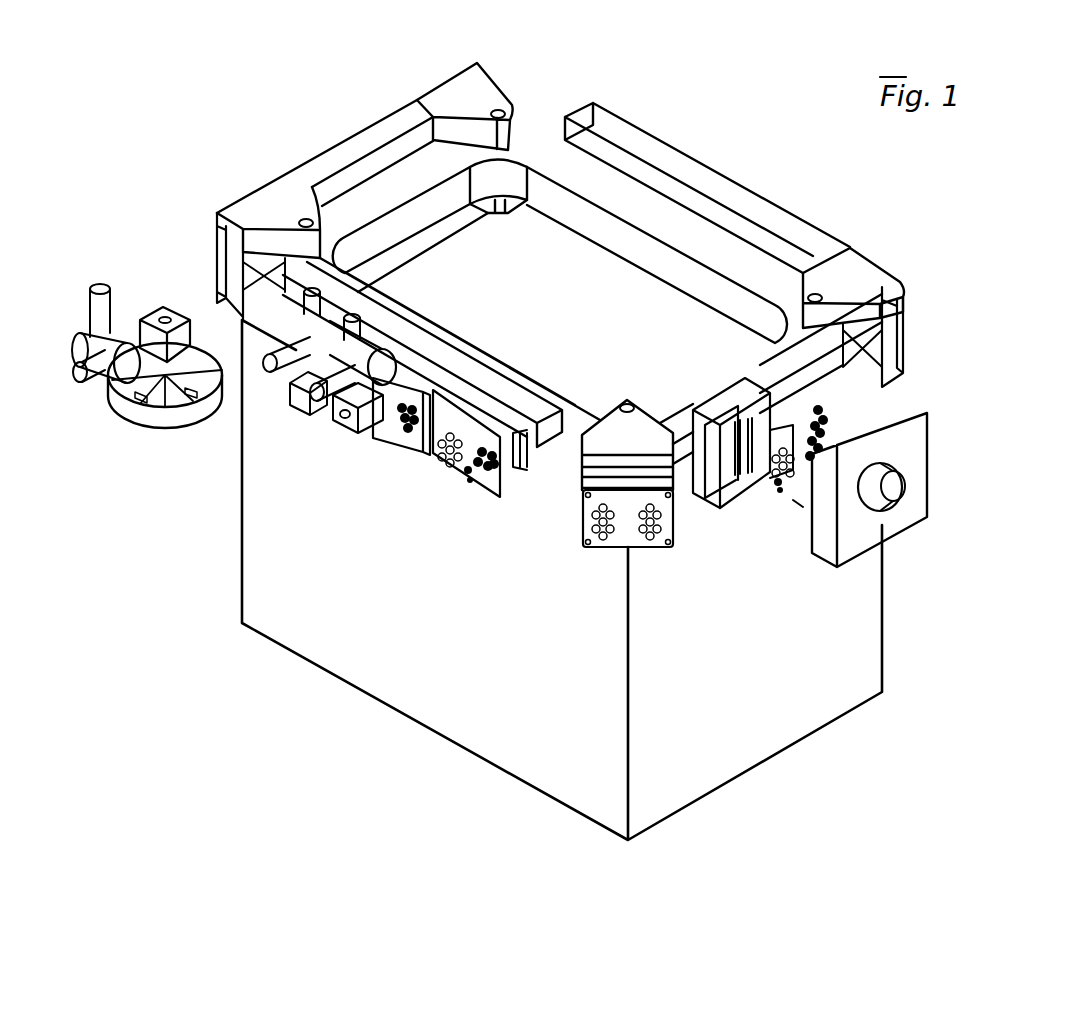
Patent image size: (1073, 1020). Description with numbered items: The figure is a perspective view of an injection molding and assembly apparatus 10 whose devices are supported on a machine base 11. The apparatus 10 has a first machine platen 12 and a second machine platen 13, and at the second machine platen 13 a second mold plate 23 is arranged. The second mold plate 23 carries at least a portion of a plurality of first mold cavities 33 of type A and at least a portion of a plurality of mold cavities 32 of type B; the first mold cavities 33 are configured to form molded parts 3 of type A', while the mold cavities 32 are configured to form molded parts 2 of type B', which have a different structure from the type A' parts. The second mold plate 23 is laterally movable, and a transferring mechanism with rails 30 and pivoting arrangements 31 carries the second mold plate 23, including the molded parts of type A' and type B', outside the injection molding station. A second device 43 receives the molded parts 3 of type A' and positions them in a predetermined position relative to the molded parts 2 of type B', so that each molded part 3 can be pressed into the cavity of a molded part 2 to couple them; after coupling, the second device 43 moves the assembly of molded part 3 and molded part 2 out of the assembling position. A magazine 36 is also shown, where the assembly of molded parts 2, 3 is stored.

The injection molding and assembly apparatus 10 is at (258, 698).
The machine base 11 is at (882, 638).
The first machine platen 12 is at (912, 407).
The second machine platen 13 is at (885, 318).
The molded parts of type B' 2 is at (505, 495).
The second mold plate 23 is at (883, 356).
The molded parts of type A' 3 is at (447, 460).
The rails 30 is at (350, 138).
The pivoting arrangements 31 is at (488, 76).
The mold cavities of type B 32 is at (842, 393).
The first mold cavities of type A 33 is at (777, 487).
The magazine 36 is at (132, 282).
The second device 43 is at (340, 448).